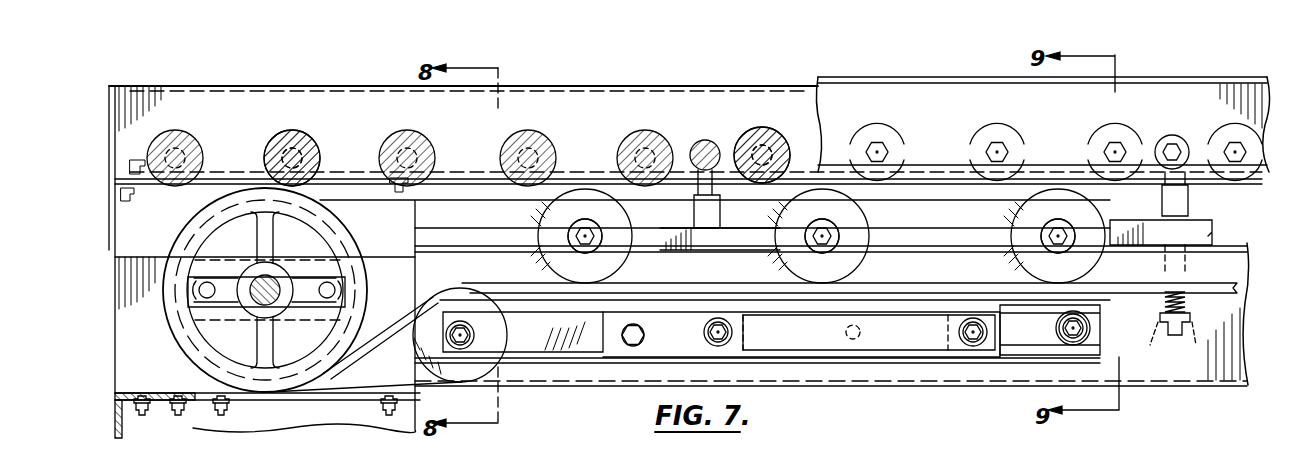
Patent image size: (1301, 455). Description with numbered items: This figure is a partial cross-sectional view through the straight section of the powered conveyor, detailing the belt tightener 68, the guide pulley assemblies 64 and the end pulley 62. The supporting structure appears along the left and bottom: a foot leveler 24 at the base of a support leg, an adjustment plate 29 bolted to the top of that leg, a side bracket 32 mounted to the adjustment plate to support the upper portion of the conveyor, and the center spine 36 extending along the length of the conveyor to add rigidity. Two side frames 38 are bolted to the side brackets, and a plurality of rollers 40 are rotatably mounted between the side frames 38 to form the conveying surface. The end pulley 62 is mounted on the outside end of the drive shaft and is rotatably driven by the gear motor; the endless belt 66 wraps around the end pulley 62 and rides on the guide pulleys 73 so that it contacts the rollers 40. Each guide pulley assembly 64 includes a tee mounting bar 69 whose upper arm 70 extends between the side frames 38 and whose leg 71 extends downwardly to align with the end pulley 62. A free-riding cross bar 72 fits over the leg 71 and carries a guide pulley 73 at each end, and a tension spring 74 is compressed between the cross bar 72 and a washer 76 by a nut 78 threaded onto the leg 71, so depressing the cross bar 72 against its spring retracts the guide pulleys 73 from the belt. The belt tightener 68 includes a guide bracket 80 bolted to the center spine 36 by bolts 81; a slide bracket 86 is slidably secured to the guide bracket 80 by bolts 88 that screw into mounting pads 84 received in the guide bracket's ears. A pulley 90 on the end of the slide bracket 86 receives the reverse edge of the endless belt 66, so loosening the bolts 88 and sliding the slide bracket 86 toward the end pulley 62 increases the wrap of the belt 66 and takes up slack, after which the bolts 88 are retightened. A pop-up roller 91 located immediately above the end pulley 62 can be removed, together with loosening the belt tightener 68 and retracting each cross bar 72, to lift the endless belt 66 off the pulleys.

The foot leveler 24 is at (120, 436).
The adjustment plate 29 is at (266, 422).
The side bracket 32 is at (115, 230).
The center spine 36 is at (115, 343).
The side frame 38 is at (262, 82).
The roller 40 is at (505, 153).
The end pulley 62 is at (344, 239).
The guide pulley assembly 64 is at (887, 244).
The endless belt 66 is at (372, 349).
The belt tightener 68 is at (584, 374).
The tee mounting bar 69 is at (703, 133).
The upper arm 70 is at (717, 150).
The leg 71 is at (698, 198).
The cross bar 72 is at (714, 216).
The guide pulley 73 is at (540, 228).
The tension spring 74 is at (1190, 306).
The washer 76 is at (1164, 340).
The nut 78 is at (1190, 345).
The guide bracket 80 is at (1012, 380).
The bolt 81 is at (633, 350).
The mounting pad 84 is at (760, 356).
The slide bracket 86 is at (898, 346).
The bolt 88 is at (738, 334).
The pulley 90 is at (455, 296).
The pop-up roller 91 is at (292, 138).